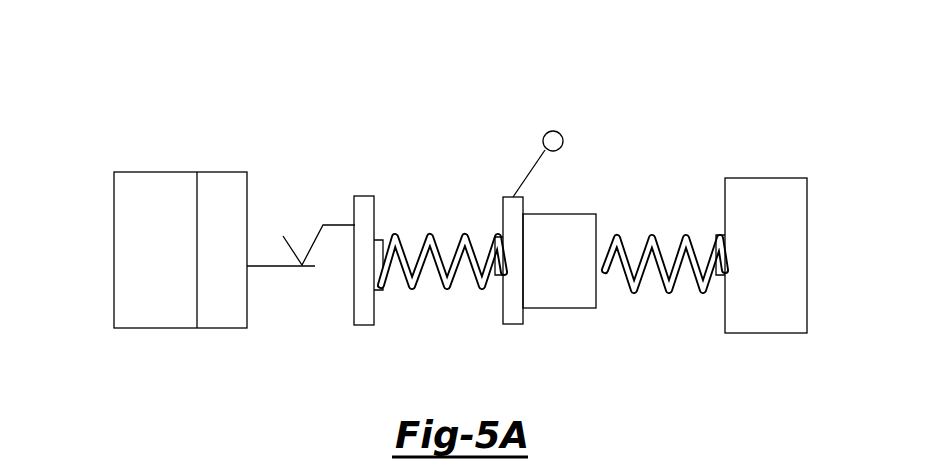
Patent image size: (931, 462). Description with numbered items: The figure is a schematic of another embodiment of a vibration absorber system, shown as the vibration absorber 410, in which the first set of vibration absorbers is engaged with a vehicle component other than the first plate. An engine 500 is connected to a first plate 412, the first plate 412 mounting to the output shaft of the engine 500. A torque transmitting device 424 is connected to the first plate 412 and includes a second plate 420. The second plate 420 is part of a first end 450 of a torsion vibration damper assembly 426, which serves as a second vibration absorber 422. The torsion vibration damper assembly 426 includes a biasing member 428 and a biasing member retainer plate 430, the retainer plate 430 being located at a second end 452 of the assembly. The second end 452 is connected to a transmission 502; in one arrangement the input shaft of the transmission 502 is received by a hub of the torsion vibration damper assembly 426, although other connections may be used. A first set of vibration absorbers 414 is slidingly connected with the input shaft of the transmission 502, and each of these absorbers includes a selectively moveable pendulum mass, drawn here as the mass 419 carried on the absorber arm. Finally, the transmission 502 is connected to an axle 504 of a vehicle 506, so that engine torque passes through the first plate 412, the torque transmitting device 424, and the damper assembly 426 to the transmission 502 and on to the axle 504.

The vibration absorber 410 is at (156, 108).
The engine 500 is at (115, 250).
The first plate 412 is at (220, 328).
The torque transmitting device 424 is at (290, 207).
The first end 450 is at (364, 184).
The second plate 420 is at (354, 298).
The torsion vibration damper assembly 426 is at (413, 224).
The second vibration absorber 422 is at (453, 226).
The biasing member 428 is at (433, 280).
The biasing member retainer plate 430 is at (503, 305).
The second end 452 is at (527, 335).
The first set of vibration absorbers 414 is at (531, 170).
The pendulum mass 419 is at (563, 141).
The transmission 502 is at (577, 214).
The axle 504 is at (674, 240).
The vehicle 506 is at (762, 178).